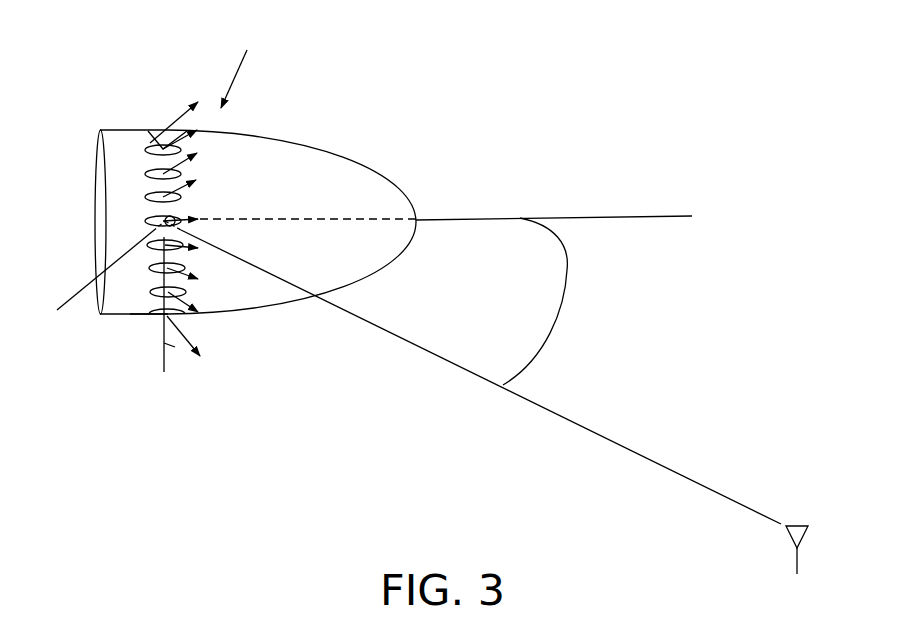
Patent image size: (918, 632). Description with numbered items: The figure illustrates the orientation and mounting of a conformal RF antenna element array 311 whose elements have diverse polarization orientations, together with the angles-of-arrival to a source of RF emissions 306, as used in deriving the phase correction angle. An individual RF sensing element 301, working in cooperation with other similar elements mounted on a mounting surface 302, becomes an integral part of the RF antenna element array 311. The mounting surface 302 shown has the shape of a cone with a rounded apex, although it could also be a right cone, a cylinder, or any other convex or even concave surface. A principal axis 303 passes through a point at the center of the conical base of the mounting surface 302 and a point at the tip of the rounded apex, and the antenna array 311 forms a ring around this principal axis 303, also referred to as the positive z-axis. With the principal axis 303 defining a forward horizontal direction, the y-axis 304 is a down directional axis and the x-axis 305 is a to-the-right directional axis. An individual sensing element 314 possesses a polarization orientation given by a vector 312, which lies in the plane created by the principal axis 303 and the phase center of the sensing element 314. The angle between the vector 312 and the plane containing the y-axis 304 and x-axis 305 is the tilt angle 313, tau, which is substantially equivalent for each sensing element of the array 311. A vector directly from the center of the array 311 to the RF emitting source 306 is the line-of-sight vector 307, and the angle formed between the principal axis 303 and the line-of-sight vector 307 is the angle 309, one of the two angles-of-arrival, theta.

The RF sensing element 301 is at (163, 149).
The mounting surface 302 is at (246, 138).
The principal axis 303 is at (582, 213).
The y-axis 304 is at (160, 368).
The x-axis 305 is at (90, 282).
The source of RF emissions 306 is at (803, 523).
The line-of-sight vector 307 is at (630, 447).
The angle-of-arrival 309 is at (563, 308).
The RF antenna element array 311 is at (248, 63).
The polarization orientation vector 312 is at (190, 345).
The tilt angle 313 is at (168, 343).
The sensing element 314 is at (157, 318).